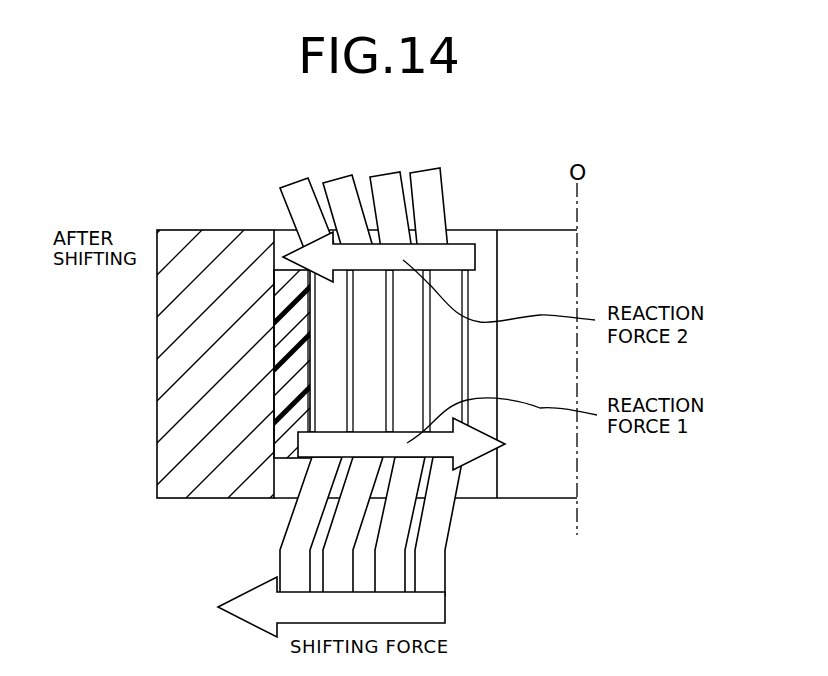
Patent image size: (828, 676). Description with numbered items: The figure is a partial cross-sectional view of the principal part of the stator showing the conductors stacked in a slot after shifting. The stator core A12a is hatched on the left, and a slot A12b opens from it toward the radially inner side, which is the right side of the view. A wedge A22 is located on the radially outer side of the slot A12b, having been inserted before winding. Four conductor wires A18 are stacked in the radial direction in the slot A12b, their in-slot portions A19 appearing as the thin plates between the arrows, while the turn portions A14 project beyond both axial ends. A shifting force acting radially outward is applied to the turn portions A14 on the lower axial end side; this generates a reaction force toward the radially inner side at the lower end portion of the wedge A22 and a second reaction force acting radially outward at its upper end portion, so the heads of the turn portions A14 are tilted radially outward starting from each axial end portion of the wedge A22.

The stator core A12a is at (173, 226).
The slot A12b is at (276, 396).
The turn portion A14 is at (347, 205).
The conductor wire A18 is at (420, 165).
The in-slot portion A19 is at (328, 368).
The wedge A22 is at (290, 326).